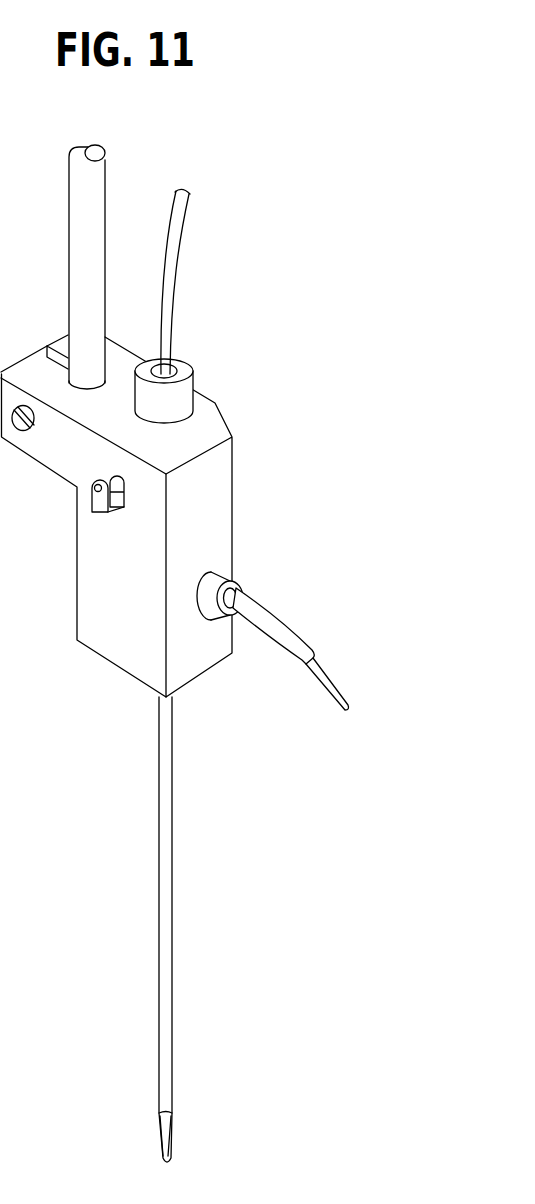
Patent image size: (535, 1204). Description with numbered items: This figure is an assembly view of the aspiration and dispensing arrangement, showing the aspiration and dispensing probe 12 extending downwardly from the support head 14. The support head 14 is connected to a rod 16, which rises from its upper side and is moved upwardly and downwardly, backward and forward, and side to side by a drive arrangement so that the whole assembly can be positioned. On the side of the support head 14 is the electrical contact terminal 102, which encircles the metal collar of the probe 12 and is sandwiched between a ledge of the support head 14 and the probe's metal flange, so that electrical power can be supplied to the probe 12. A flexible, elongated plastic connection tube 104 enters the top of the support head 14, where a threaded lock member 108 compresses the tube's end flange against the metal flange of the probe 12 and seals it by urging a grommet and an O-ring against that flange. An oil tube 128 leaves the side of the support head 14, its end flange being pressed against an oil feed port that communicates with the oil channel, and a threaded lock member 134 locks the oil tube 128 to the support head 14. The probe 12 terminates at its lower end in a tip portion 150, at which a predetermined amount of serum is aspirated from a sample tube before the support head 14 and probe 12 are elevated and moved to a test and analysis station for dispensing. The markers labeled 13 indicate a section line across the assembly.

The aspiration and dispensing probe 12 is at (178, 960).
The section line 13- 13 is at (80, 397).
The support head 14 is at (72, 608).
The rod 16 is at (72, 243).
The electrical contact terminal 102 is at (92, 500).
The plastic connection tube 104 is at (172, 253).
The threaded lock member 108 is at (192, 403).
The oil tube 128 is at (274, 631).
The threaded lock member 134 is at (224, 580).
The tip portion 150 is at (171, 1131).